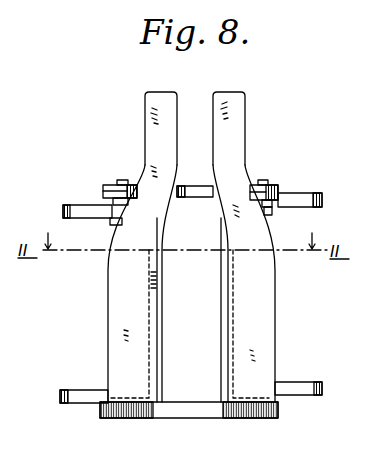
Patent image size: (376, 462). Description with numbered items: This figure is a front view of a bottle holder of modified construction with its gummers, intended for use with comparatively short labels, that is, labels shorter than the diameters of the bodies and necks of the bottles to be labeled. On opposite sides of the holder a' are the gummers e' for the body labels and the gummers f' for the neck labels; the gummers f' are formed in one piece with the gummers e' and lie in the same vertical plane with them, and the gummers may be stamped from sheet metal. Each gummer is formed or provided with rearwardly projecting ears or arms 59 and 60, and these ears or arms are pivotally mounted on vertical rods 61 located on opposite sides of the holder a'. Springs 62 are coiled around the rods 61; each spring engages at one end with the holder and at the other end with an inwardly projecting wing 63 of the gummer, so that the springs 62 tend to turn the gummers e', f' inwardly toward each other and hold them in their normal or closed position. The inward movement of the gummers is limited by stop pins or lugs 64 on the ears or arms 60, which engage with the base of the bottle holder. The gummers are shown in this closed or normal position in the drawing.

The rearwardly projecting ear or arm 59 is at (112, 202).
The rearwardly projecting ear or arm 60 is at (242, 398).
The vertical rod 61 is at (124, 178).
The spring 62 is at (116, 219).
The inwardly projecting wing 63 is at (235, 342).
The stop pin or lug 64 is at (135, 411).
The neck label gummer f' is at (195, 154).
The body label gummer e' is at (191, 283).
The bottle holder a' is at (195, 315).